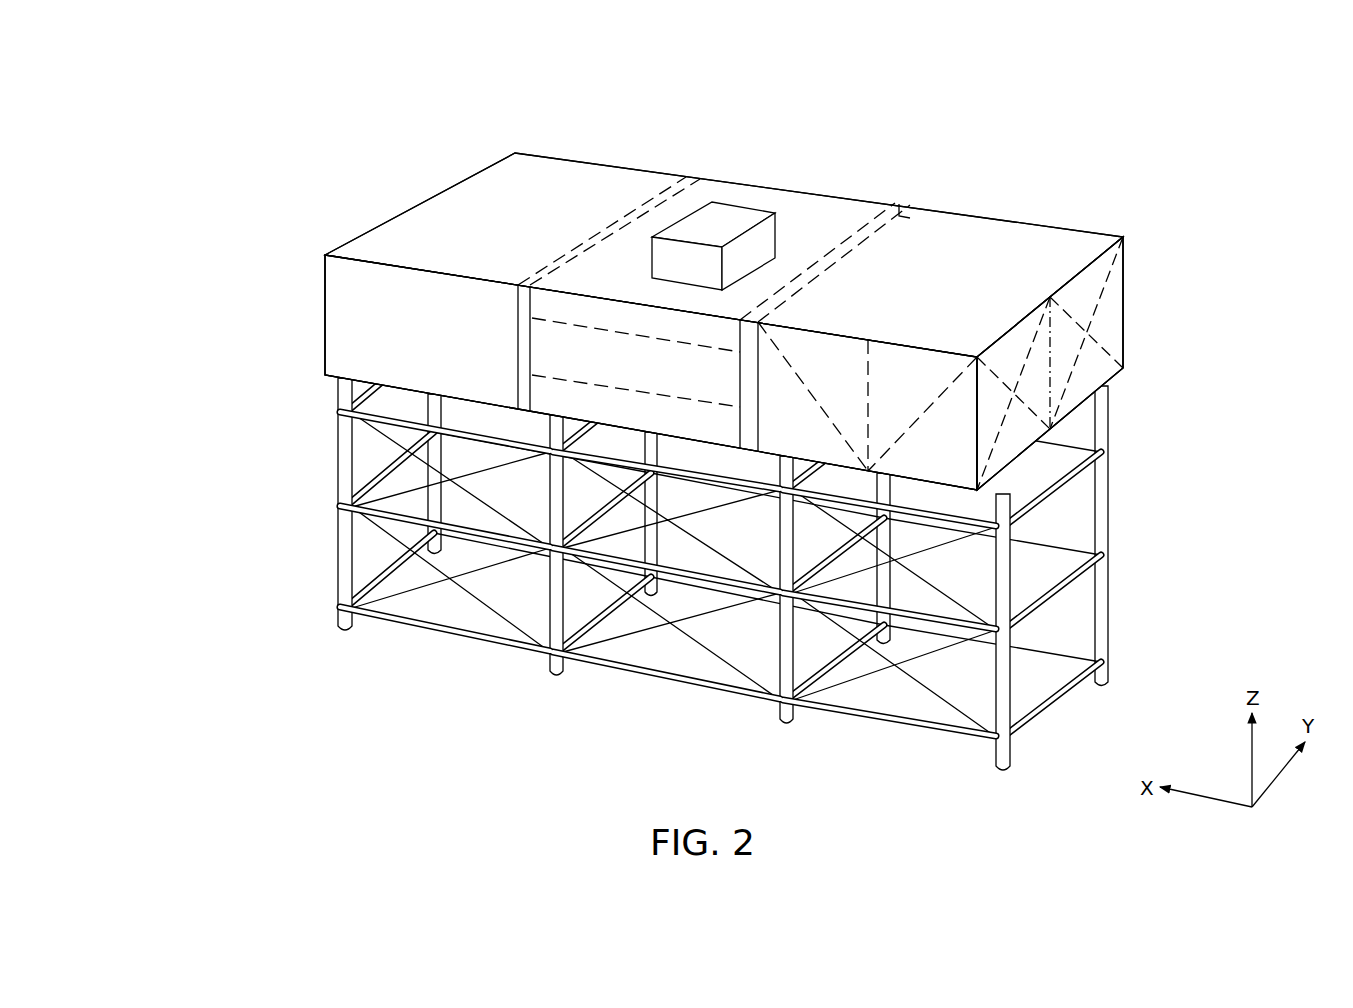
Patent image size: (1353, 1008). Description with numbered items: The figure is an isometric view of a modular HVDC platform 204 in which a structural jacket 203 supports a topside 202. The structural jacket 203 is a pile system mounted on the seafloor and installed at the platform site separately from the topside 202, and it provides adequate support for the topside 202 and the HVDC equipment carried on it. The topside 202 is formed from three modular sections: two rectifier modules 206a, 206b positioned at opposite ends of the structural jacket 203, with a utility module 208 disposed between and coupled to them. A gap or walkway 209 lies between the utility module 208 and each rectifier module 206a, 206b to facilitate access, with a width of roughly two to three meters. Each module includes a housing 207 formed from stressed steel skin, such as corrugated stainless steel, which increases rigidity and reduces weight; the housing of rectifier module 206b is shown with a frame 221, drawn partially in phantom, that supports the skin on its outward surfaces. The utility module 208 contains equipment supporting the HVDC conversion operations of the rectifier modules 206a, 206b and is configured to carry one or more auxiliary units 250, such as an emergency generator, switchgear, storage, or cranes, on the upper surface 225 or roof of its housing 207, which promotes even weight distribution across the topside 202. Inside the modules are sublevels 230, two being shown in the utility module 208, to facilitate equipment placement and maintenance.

The topside 202 is at (237, 237).
The structural jacket 203 is at (273, 448).
The modular HVDC platform 204 is at (160, 100).
The rectifier module 206a is at (543, 173).
The rectifier module 206b is at (987, 240).
The housing 207 is at (433, 345).
The utility module 208 is at (740, 198).
The walkway 209 is at (700, 173).
The frame 221 is at (1097, 343).
The upper surface 225 is at (1033, 282).
The sublevel 230 is at (552, 322).
The auxiliary unit 250 is at (684, 233).